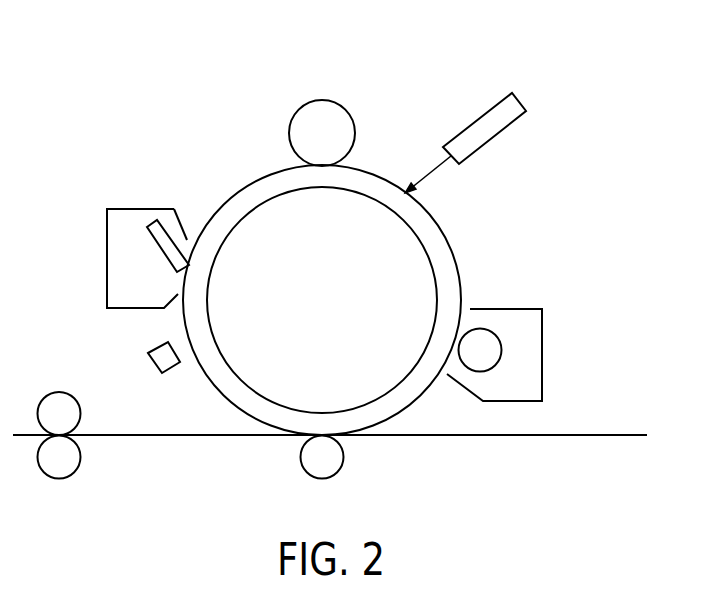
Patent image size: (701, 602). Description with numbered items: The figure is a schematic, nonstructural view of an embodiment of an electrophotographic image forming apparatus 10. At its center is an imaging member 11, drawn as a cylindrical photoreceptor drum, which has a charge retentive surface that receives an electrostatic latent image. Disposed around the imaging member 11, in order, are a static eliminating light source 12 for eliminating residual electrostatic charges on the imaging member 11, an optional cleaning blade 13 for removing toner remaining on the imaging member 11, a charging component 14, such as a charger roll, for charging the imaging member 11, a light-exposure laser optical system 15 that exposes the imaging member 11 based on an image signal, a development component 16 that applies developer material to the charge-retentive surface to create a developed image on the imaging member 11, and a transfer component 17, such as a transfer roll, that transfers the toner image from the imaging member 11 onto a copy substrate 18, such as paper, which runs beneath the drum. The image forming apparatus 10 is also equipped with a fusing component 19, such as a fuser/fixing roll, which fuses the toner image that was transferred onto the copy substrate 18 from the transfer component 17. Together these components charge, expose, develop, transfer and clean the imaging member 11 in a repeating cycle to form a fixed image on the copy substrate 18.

The image forming apparatus 10 is at (466, 92).
The imaging member 11 is at (286, 378).
The static eliminating light source 12 is at (153, 363).
The cleaning blade 13 is at (137, 208).
The charging component 14 is at (290, 128).
The light-exposure laser optical system 15 is at (495, 137).
The development component 16 is at (558, 322).
The transfer component 17 is at (345, 455).
The copy substrate 18 is at (513, 438).
The fusing component 19 is at (82, 455).